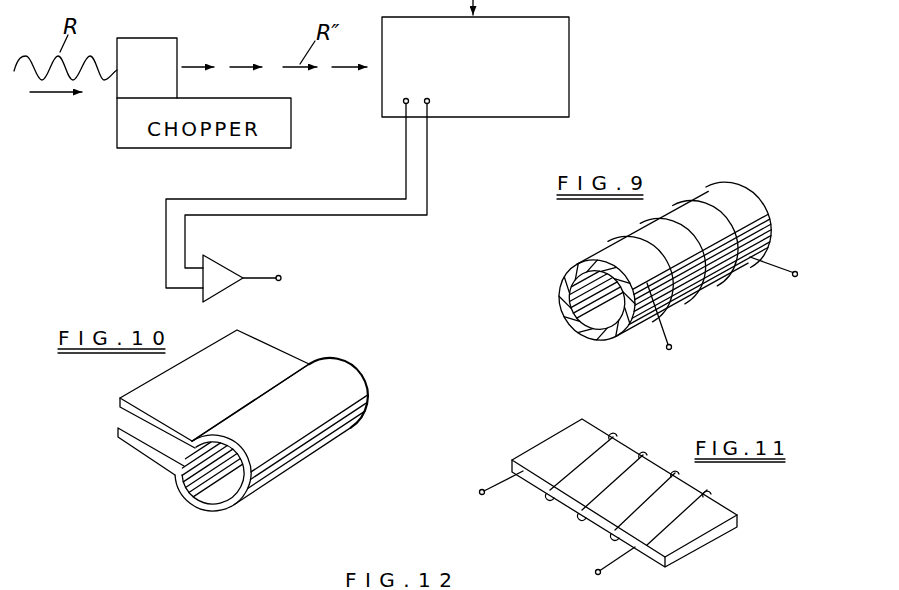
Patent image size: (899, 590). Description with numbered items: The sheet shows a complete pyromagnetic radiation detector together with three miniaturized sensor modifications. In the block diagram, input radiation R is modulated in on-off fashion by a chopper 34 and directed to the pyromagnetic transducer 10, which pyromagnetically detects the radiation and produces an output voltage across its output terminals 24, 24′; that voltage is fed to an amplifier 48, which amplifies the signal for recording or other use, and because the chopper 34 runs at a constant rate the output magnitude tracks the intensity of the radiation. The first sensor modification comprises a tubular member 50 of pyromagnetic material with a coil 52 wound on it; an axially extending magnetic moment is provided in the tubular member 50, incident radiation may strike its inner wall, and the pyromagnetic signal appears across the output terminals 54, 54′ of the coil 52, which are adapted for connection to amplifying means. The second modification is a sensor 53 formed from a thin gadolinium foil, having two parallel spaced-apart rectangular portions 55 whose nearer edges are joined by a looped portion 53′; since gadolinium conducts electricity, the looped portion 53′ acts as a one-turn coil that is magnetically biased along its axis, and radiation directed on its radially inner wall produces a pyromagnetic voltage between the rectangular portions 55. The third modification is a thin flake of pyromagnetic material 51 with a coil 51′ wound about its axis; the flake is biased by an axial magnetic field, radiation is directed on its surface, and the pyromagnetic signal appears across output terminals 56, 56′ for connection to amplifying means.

In FIG. 8, the chopper 34 is at (148, 47).
In FIG. 8, the pyromagnetic transducer 10 is at (576, 75).
In FIG. 8, the output terminal 24 is at (409, 100).
In FIG. 8, the output terminal 24′ is at (430, 101).
In FIG. 8, the amplifier 48 is at (223, 272).
In FIG. 9, the tubular member 50 is at (568, 313).
In FIG. 9, the coil 52 is at (680, 205).
In FIG. 9, the output terminal 54 is at (798, 274).
In FIG. 9, the output terminal 54′ is at (672, 346).
In FIG. 10, the sensor 53 is at (344, 387).
In FIG. 10, the looped portion 53′ is at (293, 452).
In FIG. 10, the rectangular portions 55 is at (277, 365).
In FIG. 11, the thin flake of pyromagnetic material 51 is at (715, 508).
In FIG. 11, the coil 51′ is at (628, 453).
In FIG. 11, the output terminal 56 is at (600, 574).
In FIG. 11, the output terminal 56′ is at (481, 490).